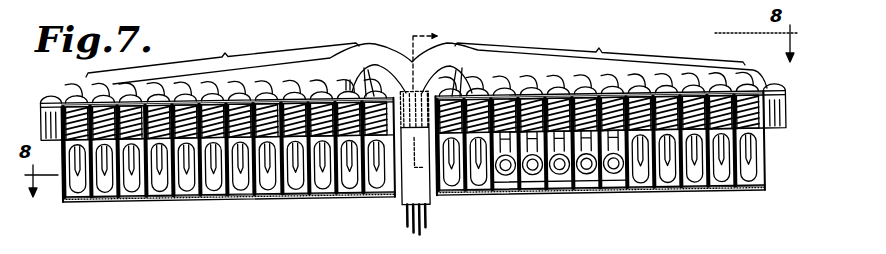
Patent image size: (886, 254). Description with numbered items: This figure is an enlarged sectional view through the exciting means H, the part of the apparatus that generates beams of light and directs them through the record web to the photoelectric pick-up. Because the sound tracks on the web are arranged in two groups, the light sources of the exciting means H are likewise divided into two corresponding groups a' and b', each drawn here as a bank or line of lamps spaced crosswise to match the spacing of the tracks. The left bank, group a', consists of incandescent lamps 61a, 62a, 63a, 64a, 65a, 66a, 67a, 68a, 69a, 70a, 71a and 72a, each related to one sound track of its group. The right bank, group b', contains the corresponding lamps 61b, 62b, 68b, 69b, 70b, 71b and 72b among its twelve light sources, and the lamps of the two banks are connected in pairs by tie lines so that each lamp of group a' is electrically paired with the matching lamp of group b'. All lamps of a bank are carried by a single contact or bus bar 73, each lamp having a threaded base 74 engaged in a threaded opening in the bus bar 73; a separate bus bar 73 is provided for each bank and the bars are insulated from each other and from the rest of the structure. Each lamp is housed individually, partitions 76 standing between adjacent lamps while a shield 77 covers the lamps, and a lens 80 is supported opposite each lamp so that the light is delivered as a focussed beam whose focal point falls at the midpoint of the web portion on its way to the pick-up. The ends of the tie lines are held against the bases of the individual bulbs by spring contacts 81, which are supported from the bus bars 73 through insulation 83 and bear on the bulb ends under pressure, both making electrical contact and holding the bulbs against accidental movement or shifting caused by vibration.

The incandescent lamp 61a is at (79, 194).
The incandescent lamp 62a is at (106, 193).
The incandescent lamp 63a is at (132, 193).
The incandescent lamp 64a is at (160, 192).
The incandescent lamp 65a is at (187, 192).
The incandescent lamp 66a is at (214, 191).
The incandescent lamp 67a is at (241, 191).
The incandescent lamp 68a is at (268, 190).
The incandescent lamp 69a is at (296, 190).
The incandescent lamp 70a is at (323, 189).
The incandescent lamp 71a is at (350, 189).
The incandescent lamp 72a is at (377, 189).
The incandescent lamp 61b is at (452, 187).
The incandescent lamp 62b is at (479, 186).
The incandescent lamp 68b is at (644, 184).
The incandescent lamp 69b is at (669, 183).
The incandescent lamp 70b is at (697, 183).
The incandescent lamp 71b is at (724, 182).
The incandescent lamp 72b is at (752, 181).
The bus bar 73 is at (42, 126).
The threaded base 74 is at (101, 115).
The partition 76 is at (520, 190).
The shield 77 is at (72, 203).
The lens 80 is at (568, 178).
The spring contact 81 is at (208, 95).
The insulation 83 is at (772, 90).
The group of light sources a' is at (222, 54).
The group of light sources b' is at (600, 44).
The exciting means H is at (540, 57).